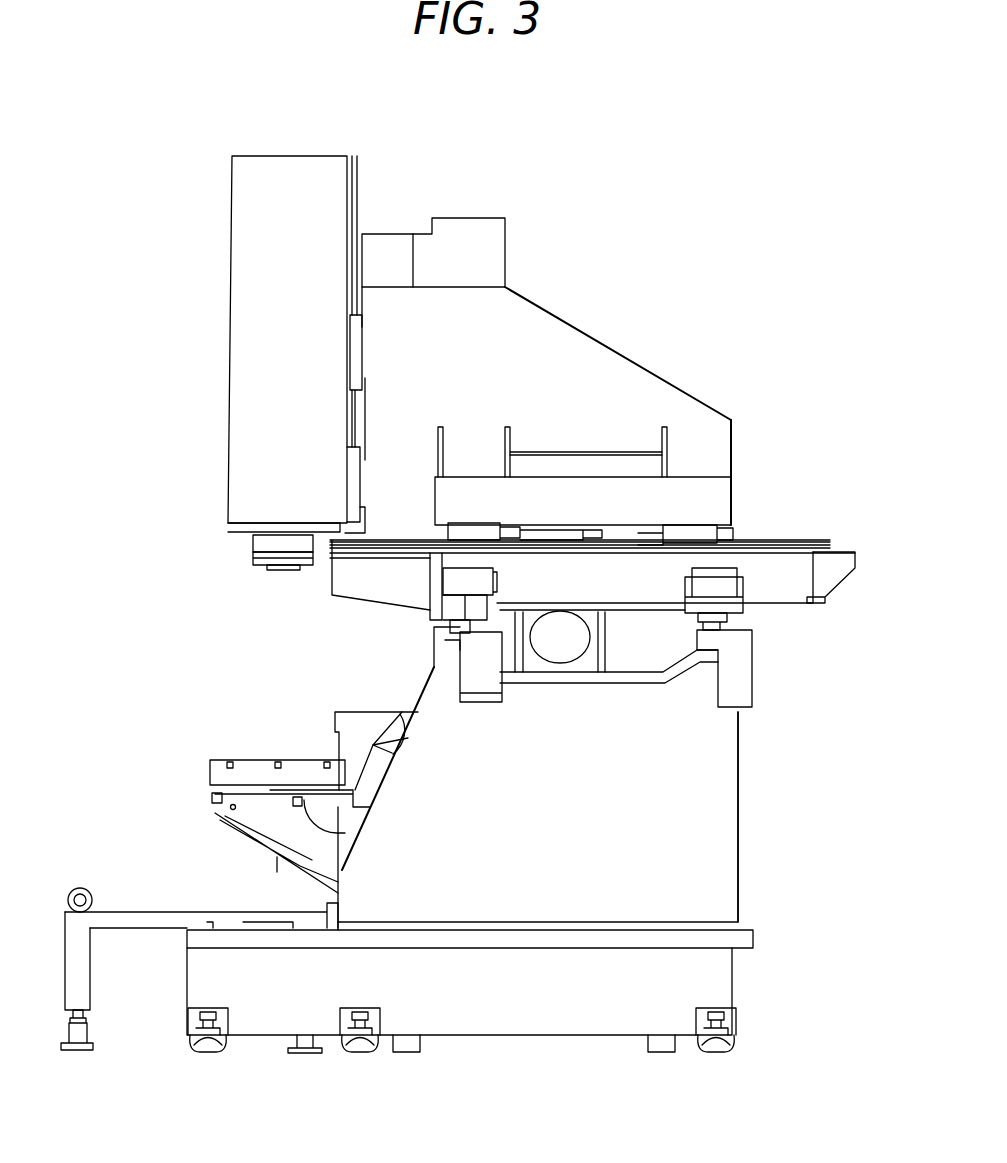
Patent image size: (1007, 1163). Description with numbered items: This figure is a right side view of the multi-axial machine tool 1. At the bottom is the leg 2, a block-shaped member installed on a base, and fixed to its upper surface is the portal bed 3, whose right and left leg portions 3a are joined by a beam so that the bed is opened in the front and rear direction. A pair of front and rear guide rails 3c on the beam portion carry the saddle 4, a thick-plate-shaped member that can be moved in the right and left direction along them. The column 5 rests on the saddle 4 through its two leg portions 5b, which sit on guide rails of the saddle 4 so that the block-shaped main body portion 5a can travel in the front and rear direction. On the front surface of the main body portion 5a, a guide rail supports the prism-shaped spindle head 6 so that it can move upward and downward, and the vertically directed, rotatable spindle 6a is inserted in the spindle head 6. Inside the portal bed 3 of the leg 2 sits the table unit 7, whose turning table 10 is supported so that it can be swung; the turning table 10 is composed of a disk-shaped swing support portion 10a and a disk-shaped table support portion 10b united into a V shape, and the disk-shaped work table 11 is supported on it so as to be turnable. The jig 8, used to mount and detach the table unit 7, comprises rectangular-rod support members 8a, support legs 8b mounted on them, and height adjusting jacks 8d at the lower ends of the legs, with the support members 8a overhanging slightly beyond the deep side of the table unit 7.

The multi-axial machine tool 1 is at (200, 402).
The leg 2 is at (544, 1036).
The portal bed 3 is at (740, 795).
The leg portion 3a is at (738, 743).
The guide rail 3c is at (436, 655).
The saddle 4 is at (805, 604).
The column 5 is at (714, 402).
The main body portion 5a is at (605, 355).
The leg portion 5b is at (733, 457).
The spindle head 6 is at (232, 241).
The spindle 6a is at (253, 545).
The table unit 7 is at (266, 708).
The jig 8 is at (63, 907).
The support member 8a is at (146, 910).
The support leg 8b is at (92, 983).
The height adjusting jack 8d is at (88, 1033).
The turning table 10 is at (347, 717).
The swing support portion 10a is at (384, 716).
The table support portion 10b is at (212, 800).
The work table 11 is at (210, 758).